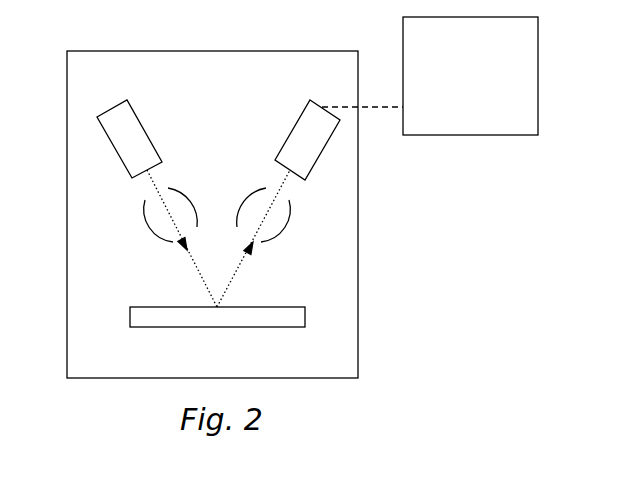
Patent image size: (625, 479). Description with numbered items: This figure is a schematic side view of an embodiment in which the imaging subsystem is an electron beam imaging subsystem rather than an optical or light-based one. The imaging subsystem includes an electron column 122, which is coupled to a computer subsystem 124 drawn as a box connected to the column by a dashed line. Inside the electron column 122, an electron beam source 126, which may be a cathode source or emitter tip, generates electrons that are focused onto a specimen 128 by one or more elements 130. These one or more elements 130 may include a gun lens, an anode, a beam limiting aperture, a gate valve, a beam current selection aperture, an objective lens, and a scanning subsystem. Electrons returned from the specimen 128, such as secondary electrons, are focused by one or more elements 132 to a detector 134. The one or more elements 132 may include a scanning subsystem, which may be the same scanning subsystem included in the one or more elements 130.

The electron column 122 is at (200, 50).
The computer subsystem 124 is at (470, 76).
The electron beam source 126 is at (133, 110).
The specimen 128 is at (262, 307).
The one or more elements 130 is at (151, 235).
The one or more elements 132 is at (283, 235).
The detector 134 is at (302, 113).